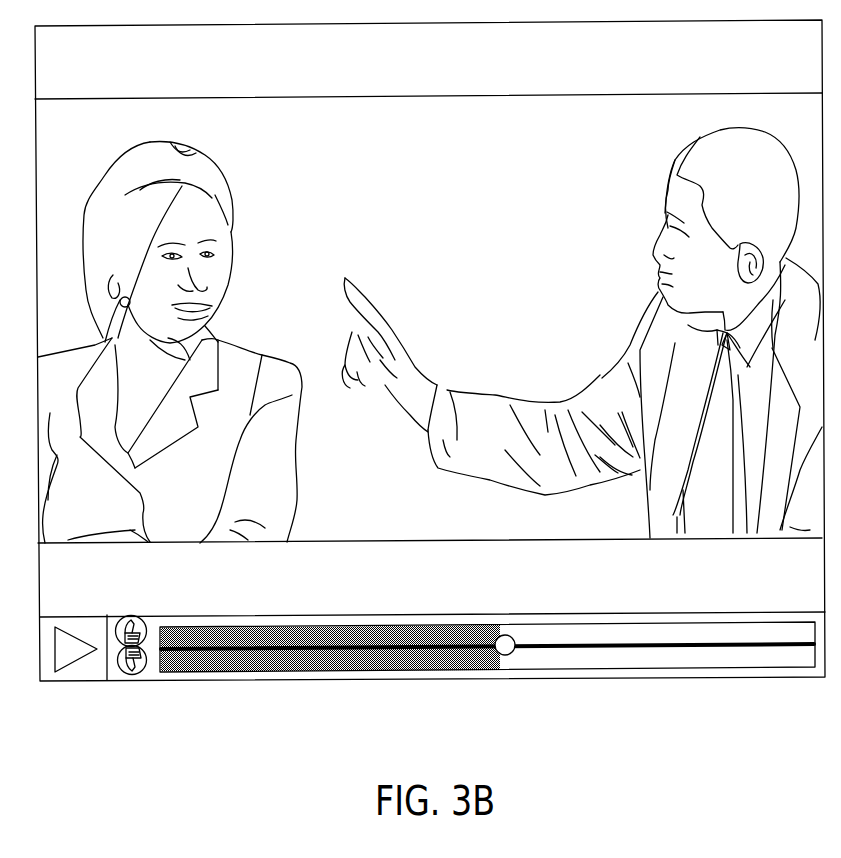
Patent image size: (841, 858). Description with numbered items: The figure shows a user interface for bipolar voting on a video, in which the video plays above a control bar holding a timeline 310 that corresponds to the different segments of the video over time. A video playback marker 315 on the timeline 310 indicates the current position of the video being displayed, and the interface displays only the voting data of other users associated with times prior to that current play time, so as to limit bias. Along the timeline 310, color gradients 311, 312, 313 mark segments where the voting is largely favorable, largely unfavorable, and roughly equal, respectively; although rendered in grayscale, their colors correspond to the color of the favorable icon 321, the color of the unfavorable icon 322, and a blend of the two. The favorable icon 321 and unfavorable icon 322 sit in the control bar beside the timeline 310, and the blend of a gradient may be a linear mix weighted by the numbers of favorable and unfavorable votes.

The timeline 310 is at (163, 667).
The color gradient 311 is at (238, 657).
The color gradient 312 is at (268, 667).
The color gradient 313 is at (370, 665).
The video playback marker 315 is at (507, 655).
The favorable icon 321 is at (115, 645).
The unfavorable icon 322 is at (128, 677).